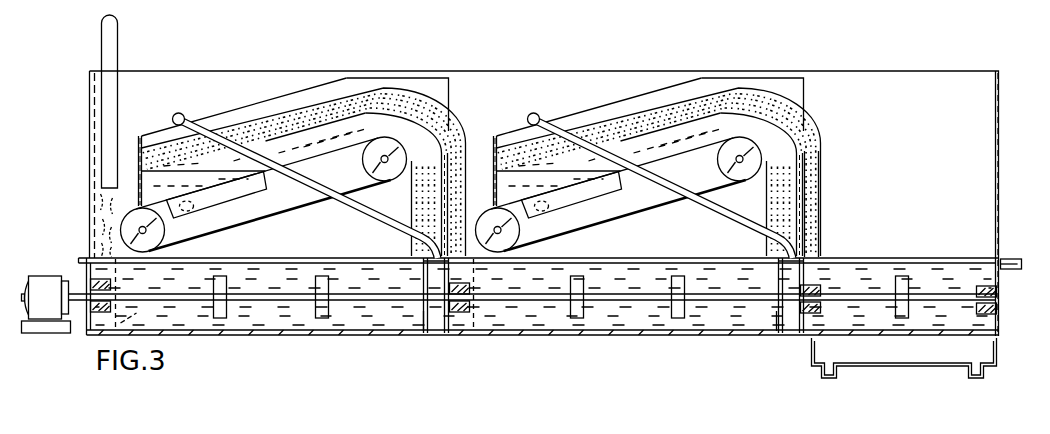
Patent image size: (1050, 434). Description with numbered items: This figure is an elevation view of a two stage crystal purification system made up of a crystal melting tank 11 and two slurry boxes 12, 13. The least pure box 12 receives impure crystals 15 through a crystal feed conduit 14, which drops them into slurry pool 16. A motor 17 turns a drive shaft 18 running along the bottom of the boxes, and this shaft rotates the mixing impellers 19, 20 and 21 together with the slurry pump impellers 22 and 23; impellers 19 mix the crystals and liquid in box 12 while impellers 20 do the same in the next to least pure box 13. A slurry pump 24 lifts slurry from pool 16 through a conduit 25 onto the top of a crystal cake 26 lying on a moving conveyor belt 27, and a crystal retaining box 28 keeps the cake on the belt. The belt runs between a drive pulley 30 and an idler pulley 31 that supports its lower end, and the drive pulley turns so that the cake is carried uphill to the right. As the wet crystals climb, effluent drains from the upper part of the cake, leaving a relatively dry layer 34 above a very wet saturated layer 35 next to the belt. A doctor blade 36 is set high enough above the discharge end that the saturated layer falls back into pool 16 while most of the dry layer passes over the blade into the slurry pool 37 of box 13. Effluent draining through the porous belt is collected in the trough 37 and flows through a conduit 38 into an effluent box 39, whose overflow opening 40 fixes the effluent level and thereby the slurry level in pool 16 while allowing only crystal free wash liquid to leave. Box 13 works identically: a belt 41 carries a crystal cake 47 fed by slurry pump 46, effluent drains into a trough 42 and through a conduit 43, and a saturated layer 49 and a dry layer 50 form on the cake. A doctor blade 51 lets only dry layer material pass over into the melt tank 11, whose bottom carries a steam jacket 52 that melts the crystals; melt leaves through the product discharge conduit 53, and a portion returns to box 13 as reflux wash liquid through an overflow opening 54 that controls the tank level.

The crystal melting tank 11 is at (890, 69).
The slurry box 12 is at (273, 69).
The slurry box 13 is at (657, 146).
The crystal feed conduit 14 is at (115, 53).
The impure crystals 15 is at (85, 197).
The slurry pool 16 is at (286, 257).
The motor 17 is at (38, 275).
The drive shaft 18 is at (266, 291).
The mixing impellers 19 is at (213, 273).
The mixing impellers 20 is at (564, 273).
The mixing impeller 21 is at (892, 284).
The slurry pump impeller 22 is at (418, 318).
The slurry pump impeller 23 is at (770, 318).
The slurry pump 24 is at (385, 257).
The conduit 25 is at (180, 112).
The crystal cake 26 is at (298, 167).
The conveyor belt 27 is at (391, 197).
The crystal retaining box 28 is at (138, 133).
The drive pulley 30 is at (370, 176).
The idler pulley 31 is at (162, 234).
The dry layer 34 is at (302, 174).
The saturated layer 35 is at (255, 149).
The doctor blade 36 is at (410, 111).
The slurry pool 37 is at (263, 172).
The conduit 38 is at (196, 203).
The effluent box 39 is at (140, 295).
The overflow opening 40 is at (79, 262).
The belt 41 is at (725, 159).
The trough 42 is at (588, 195).
The conduit 43 is at (518, 230).
The slurry pump 46 is at (755, 283).
The crystal cake 47 is at (660, 169).
The saturated layer of crystals 49 is at (610, 149).
The dry layer of crystals 50 is at (680, 174).
The doctor blade 51 is at (779, 169).
The steam jacket 52 is at (884, 370).
The product discharge conduit 53 is at (1013, 259).
The overflow opening 54 is at (839, 204).